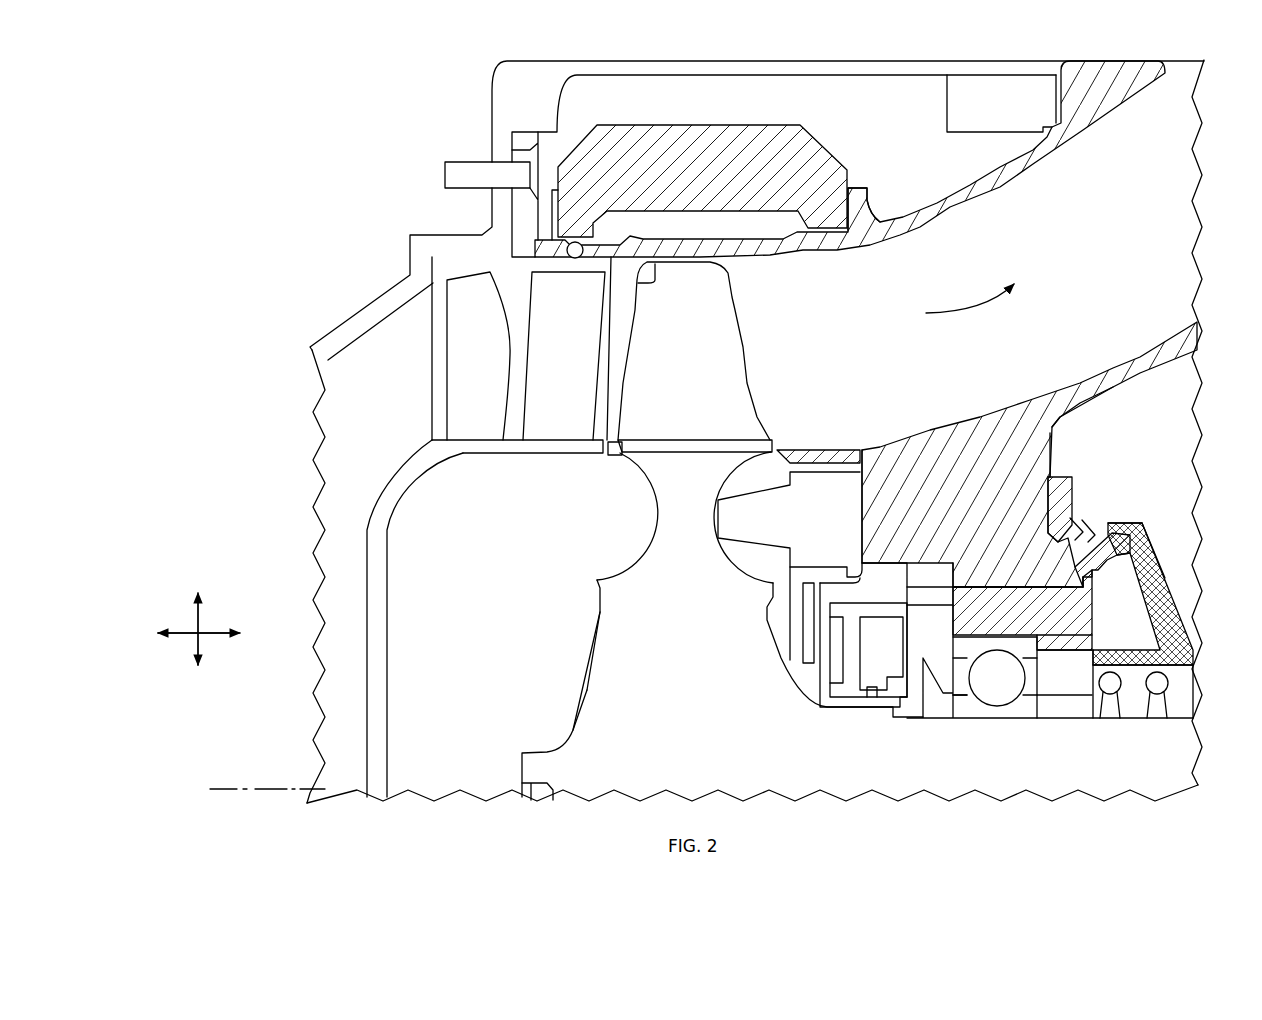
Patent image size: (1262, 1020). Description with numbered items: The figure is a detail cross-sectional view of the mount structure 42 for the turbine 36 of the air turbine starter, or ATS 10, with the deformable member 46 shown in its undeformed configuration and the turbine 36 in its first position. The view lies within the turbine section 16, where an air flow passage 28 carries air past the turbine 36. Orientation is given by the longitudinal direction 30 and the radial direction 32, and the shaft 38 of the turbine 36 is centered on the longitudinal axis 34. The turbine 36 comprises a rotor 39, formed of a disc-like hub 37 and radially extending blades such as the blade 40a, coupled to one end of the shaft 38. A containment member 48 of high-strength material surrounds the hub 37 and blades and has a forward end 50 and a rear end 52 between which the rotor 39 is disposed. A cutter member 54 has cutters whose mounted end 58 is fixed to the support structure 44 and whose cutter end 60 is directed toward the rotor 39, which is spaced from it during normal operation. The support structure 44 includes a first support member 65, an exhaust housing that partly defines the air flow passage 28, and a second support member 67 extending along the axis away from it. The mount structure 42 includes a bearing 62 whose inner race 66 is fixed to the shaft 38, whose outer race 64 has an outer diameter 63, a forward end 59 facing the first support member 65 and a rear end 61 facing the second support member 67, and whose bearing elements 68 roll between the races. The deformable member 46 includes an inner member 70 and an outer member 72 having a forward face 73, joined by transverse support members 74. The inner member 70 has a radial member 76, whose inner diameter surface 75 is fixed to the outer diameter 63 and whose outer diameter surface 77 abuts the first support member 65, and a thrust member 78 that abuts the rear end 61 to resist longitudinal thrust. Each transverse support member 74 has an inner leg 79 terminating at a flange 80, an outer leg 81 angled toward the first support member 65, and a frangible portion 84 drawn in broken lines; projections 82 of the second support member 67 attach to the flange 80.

The air turbine starter 10 is at (214, 133).
The turbine section 16 is at (502, 66).
The air flow passage 28 is at (953, 228).
The longitudinal direction 30 is at (218, 633).
The radial direction 32 is at (197, 605).
The longitudinal axis 34 is at (222, 787).
The turbine 36 is at (578, 606).
The hub 37 is at (580, 727).
The shaft 38 is at (908, 782).
The rotor 39 is at (590, 693).
The blade 40a is at (742, 345).
The mount structure 42 is at (925, 601).
The support structure 44 is at (950, 492).
The deformable member 46 is at (1112, 545).
The containment member 48 is at (697, 172).
The forward end 50 is at (542, 132).
The rear end 52 is at (850, 180).
The cutter member 54 is at (802, 488).
The mounted end 58 is at (838, 487).
The forward end 59 is at (953, 642).
The cutter end 60 is at (727, 517).
The rear end 61 is at (1133, 673).
The bearing 62 is at (950, 707).
The outer diameter 63 is at (982, 633).
The outer race 64 is at (1027, 653).
The first support member 65 is at (1000, 442).
The inner race 66 is at (1022, 720).
The second support member 67 is at (1190, 662).
The bearing elements 68 is at (982, 703).
The inner member 70 is at (1040, 617).
The outer member 72 is at (1078, 480).
The forward face 73 is at (1046, 517).
The transverse support members 74 is at (1087, 557).
The inner diameter surface 75 is at (988, 643).
The radial member 76 is at (968, 587).
The outer diameter surface 77 is at (1003, 587).
The thrust member 78 is at (1092, 638).
The inner leg 79 is at (1073, 567).
The flange 80 is at (1140, 522).
The outer leg 81 is at (1073, 526).
The projections 82 is at (1142, 548).
The frangible portion 84 is at (1088, 585).